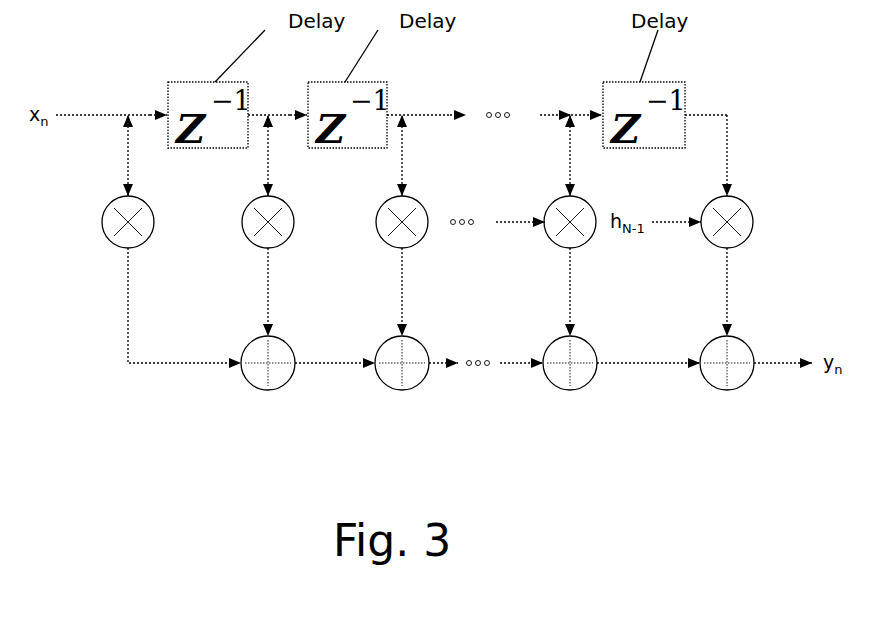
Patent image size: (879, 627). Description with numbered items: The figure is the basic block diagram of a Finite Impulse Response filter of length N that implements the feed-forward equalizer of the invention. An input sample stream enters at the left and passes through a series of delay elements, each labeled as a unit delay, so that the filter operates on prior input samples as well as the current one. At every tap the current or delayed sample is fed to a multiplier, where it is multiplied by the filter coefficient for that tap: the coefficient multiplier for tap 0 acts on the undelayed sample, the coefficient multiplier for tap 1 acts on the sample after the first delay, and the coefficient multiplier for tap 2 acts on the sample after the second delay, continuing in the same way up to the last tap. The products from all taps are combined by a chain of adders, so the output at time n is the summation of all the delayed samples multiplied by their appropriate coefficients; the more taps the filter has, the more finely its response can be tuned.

The multiplier for filter coefficient h0 0 is at (102, 222).
The multiplier for filter coefficient h1 1 is at (242, 222).
The multiplier for filter coefficient h2 2 is at (376, 222).